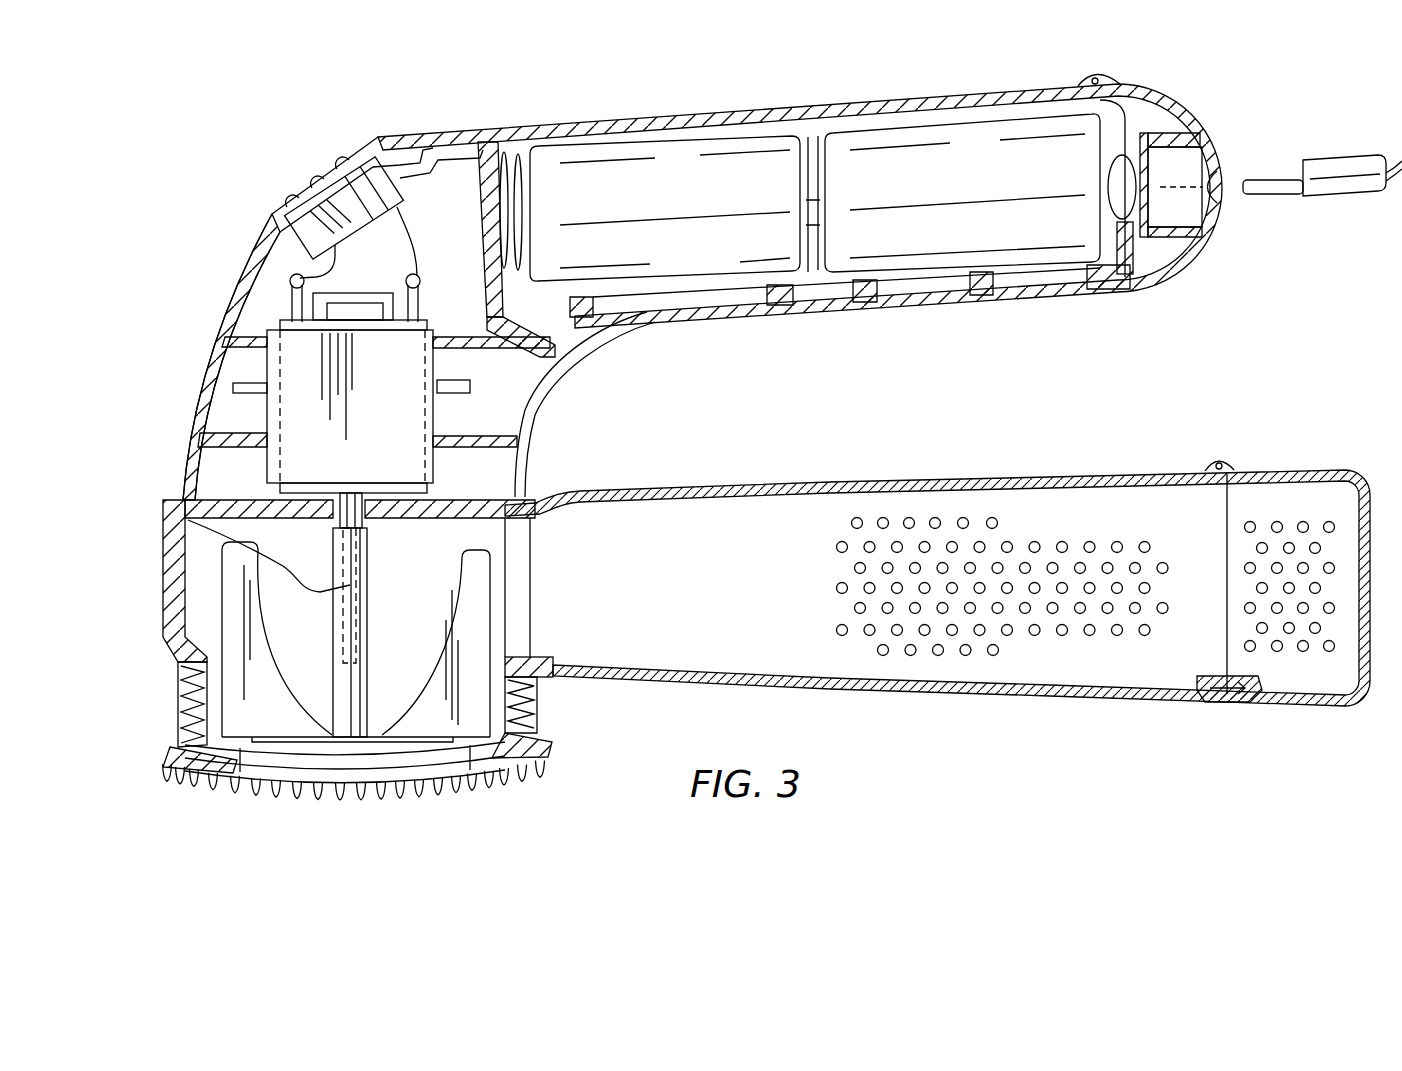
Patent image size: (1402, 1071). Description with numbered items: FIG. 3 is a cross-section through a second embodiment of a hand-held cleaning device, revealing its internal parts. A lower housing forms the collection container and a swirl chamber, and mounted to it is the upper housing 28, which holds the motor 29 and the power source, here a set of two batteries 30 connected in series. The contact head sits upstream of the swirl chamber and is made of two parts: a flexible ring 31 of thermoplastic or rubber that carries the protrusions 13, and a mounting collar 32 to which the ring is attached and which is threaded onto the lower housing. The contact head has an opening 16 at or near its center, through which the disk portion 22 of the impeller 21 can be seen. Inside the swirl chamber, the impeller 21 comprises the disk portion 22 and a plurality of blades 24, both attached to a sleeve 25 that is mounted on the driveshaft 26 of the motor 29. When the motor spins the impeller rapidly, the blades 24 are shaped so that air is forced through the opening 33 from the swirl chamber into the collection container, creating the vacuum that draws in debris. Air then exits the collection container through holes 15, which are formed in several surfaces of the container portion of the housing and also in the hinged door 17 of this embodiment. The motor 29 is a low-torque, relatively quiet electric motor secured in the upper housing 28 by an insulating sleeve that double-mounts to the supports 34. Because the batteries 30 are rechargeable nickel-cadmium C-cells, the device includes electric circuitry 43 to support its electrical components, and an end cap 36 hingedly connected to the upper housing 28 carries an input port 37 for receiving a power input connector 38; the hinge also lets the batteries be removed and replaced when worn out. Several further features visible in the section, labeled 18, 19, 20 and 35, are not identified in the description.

The protrusions 13 is at (500, 772).
The holes 15 is at (1037, 473).
The opening 16 is at (258, 790).
The hinged door 17 is at (1360, 468).
The switch 18 is at (340, 170).
The screw boss 19 is at (1218, 462).
The latch 20 is at (1218, 703).
The impeller 21 is at (345, 722).
The disk portion 22 is at (330, 750).
The blades 24 is at (232, 592).
The sleeve 25 is at (185, 505).
The driveshaft 26 is at (368, 620).
The upper housing 28 is at (248, 265).
The motor 29 is at (310, 380).
The batteries 30 is at (890, 165).
The flexible ring 31 is at (175, 762).
The mounting collar 32 is at (190, 740).
The opening 33 is at (543, 560).
The supports 34 is at (222, 352).
The partition wall 35 is at (440, 367).
The end cap 36 is at (1215, 128).
The input port 37 is at (1225, 197).
The power input connector 38 is at (1330, 162).
The electric circuitry 43 is at (603, 130).